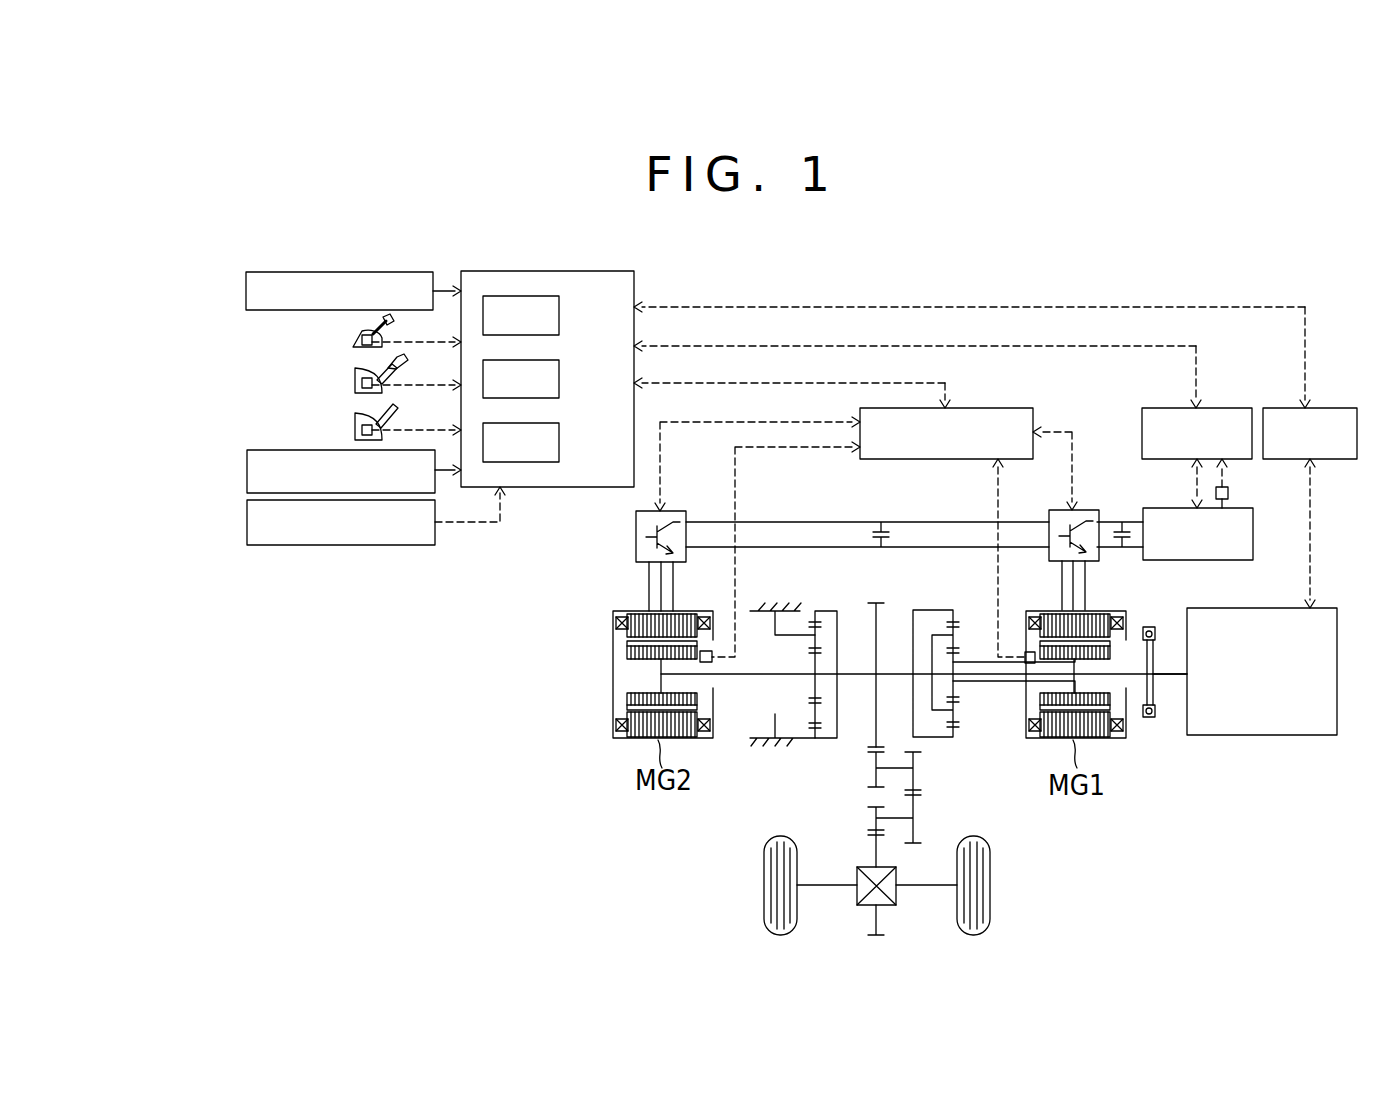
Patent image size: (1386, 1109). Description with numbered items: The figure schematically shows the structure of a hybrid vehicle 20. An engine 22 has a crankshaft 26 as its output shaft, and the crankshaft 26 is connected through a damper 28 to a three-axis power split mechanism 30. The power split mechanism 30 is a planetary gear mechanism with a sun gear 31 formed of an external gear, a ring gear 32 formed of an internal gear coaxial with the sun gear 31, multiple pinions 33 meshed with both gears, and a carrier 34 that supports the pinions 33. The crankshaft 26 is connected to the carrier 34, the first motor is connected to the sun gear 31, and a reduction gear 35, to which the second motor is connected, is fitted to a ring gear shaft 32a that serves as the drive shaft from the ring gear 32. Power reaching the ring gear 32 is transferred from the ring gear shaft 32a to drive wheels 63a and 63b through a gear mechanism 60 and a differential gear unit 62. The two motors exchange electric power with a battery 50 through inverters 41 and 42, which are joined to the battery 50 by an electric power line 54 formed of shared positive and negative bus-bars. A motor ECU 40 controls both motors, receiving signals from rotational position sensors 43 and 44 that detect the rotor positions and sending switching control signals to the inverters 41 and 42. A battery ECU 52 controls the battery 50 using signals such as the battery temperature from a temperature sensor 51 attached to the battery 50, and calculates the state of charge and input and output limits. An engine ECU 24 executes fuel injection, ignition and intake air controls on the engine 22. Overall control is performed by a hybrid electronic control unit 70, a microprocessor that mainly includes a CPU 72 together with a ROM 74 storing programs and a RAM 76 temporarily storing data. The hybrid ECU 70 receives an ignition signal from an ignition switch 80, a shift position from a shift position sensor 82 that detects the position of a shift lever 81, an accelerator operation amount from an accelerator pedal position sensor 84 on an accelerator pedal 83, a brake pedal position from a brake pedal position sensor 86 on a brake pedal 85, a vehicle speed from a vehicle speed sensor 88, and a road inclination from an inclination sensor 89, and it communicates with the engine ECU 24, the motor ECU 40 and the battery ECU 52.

The hybrid vehicle 20 is at (1139, 236).
The engine 22 is at (1264, 735).
The engine ECU 24 is at (1329, 408).
The crankshaft 26 is at (1170, 676).
The damper 28 is at (1150, 717).
The power split mechanism 30 is at (955, 606).
The sun gear 31 is at (958, 686).
The ring gear 32 is at (958, 733).
The ring gear shaft 32a is at (884, 655).
The pinions 33 is at (958, 710).
The carrier 34 is at (940, 633).
The reduction gear 35 is at (820, 606).
The motor ECU 40 is at (985, 408).
The inverter 41 is at (1092, 510).
The inverter 42 is at (682, 511).
The rotational position sensor 43 is at (1030, 652).
The rotational position sensor 44 is at (706, 651).
The battery 50 is at (1198, 560).
The temperature sensor 51 is at (1228, 492).
The battery ECU 52 is at (1224, 408).
The electric power line 54 is at (930, 547).
The gear mechanism 60 is at (935, 803).
The differential gear unit 62 is at (896, 898).
The drive wheel 63a is at (764, 885).
The drive wheel 63b is at (990, 885).
The hybrid electronic control unit 70 is at (547, 353).
The CPU 72 is at (561, 317).
The ROM 74 is at (561, 381).
The RAM 76 is at (561, 444).
The ignition switch 80 is at (246, 291).
The shift lever 81 is at (378, 324).
The shift position sensor 82 is at (355, 339).
The accelerator pedal 83 is at (388, 366).
The accelerator pedal position sensor 84 is at (355, 383).
The brake pedal 85 is at (386, 410).
The brake pedal position sensor 86 is at (355, 428).
The vehicle speed sensor 88 is at (247, 472).
The inclination sensor 89 is at (247, 522).